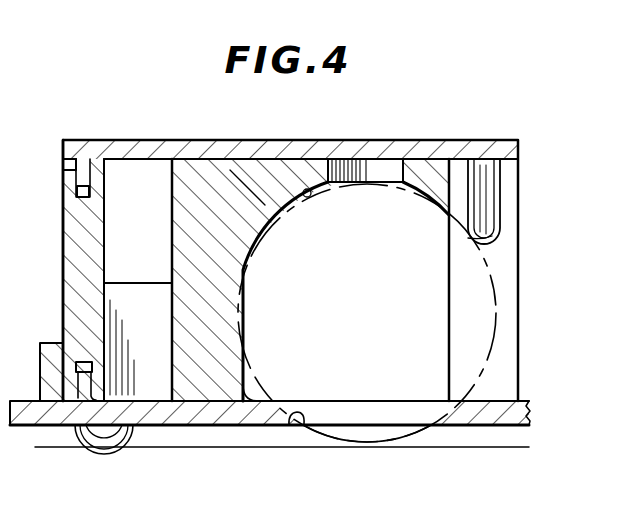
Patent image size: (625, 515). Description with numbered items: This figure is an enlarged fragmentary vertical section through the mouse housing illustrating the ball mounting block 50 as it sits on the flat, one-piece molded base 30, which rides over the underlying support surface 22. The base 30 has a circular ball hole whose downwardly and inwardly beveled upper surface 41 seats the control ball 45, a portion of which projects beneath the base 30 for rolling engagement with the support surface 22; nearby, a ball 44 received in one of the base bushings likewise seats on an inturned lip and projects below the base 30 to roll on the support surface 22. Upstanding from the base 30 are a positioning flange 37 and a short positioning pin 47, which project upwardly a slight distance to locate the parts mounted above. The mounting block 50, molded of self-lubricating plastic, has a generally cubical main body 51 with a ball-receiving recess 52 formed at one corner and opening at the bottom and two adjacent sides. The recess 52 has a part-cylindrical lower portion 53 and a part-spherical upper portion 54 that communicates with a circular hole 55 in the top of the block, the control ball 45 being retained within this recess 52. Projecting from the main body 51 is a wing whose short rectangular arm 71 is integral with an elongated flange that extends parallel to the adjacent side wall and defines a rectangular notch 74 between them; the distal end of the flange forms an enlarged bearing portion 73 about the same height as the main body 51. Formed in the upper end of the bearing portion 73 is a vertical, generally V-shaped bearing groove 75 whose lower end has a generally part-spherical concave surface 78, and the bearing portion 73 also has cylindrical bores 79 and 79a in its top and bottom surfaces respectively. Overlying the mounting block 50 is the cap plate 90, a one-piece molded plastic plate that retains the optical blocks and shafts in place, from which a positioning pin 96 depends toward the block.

The support surface 22 is at (216, 440).
The base 30 is at (492, 430).
The positioning flange 37 is at (48, 343).
The beveled upper surface 41 is at (300, 426).
The ball 44 is at (104, 436).
The control ball 45 is at (433, 428).
The positioning pin 47 is at (86, 388).
The mounting block 50 is at (207, 184).
The main body 51 is at (258, 188).
The ball-receiving recess 52 is at (352, 370).
The part-cylindrical lower portion 53 is at (250, 384).
The part-spherical upper portion 54 is at (306, 189).
The circular hole 55 is at (402, 160).
The rectangular arm 71 is at (144, 300).
The bearing portion 73 is at (80, 231).
The rectangular notch 74 is at (130, 182).
The bearing groove 75 is at (489, 176).
The part-spherical concave surface 78 is at (488, 235).
The cylindrical bore 79 is at (80, 191).
The cylindrical bore 79a is at (88, 366).
The cap plate 90 is at (370, 158).
The positioning pin 96 is at (82, 172).